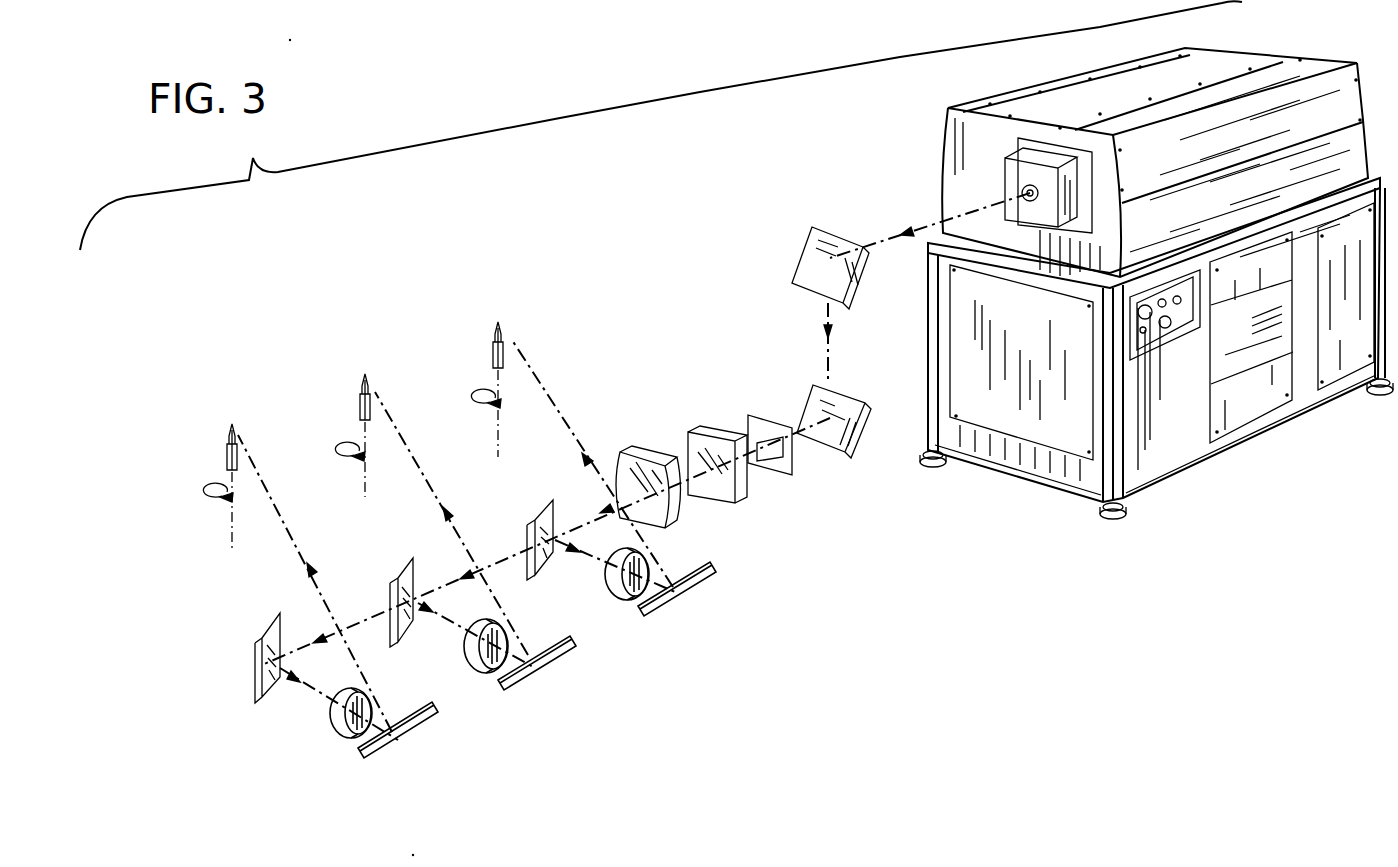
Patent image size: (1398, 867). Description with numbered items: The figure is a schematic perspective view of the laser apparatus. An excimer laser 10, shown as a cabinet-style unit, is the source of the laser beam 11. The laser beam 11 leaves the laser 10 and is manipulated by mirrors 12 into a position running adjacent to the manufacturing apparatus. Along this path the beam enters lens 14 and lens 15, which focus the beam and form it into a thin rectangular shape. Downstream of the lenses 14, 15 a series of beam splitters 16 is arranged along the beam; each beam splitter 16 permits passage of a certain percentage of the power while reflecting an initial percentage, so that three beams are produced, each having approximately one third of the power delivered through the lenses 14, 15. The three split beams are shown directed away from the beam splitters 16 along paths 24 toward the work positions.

The laser 10 is at (948, 133).
The laser beam 11 is at (922, 228).
The mirrors 12 is at (823, 246).
The lens 14 is at (742, 503).
The lens 15 is at (678, 513).
The beam splitters 16 is at (540, 515).
The scanning beam path 24 is at (556, 408).